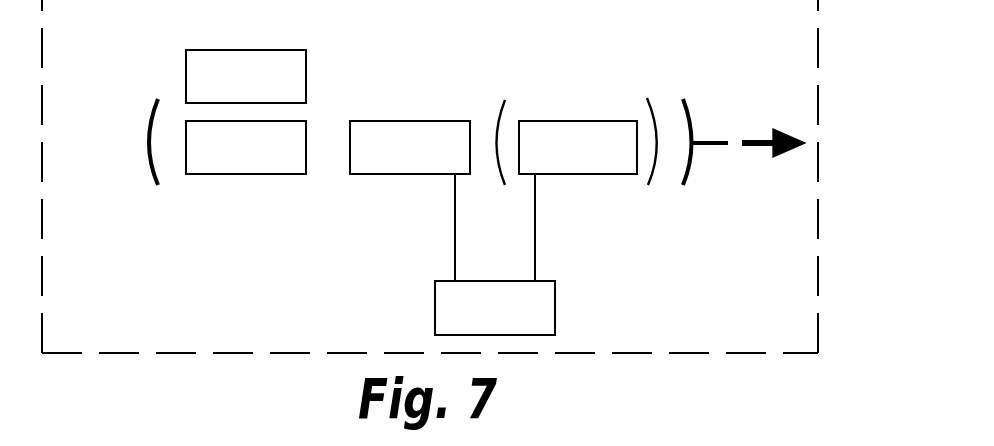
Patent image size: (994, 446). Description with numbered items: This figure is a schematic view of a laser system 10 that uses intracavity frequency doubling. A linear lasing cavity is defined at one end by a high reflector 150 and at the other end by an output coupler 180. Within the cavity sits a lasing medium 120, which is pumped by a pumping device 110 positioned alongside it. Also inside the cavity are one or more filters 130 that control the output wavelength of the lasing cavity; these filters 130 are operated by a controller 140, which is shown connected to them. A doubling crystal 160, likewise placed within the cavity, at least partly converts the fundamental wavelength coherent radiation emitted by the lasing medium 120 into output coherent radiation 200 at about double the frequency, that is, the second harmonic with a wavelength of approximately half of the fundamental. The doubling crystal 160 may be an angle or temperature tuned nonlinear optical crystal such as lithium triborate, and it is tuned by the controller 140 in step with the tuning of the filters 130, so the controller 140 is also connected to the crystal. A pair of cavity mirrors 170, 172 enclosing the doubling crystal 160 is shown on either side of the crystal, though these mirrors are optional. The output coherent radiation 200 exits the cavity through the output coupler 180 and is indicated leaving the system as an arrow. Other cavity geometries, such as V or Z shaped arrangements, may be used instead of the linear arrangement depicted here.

The optical system housing / dashed enclosure 10 is at (818, 68).
The pumping device 110 is at (298, 50).
The lasing medium 120 is at (231, 175).
The filters 130 is at (376, 174).
The controller 140 is at (437, 281).
The high reflector 150 is at (147, 115).
The doubling crystal 160 is at (588, 121).
The cavity mirror 170 is at (505, 100).
The cavity mirror 172 is at (648, 98).
The output coupler 180 is at (688, 100).
The output coherent radiation 200 is at (708, 145).